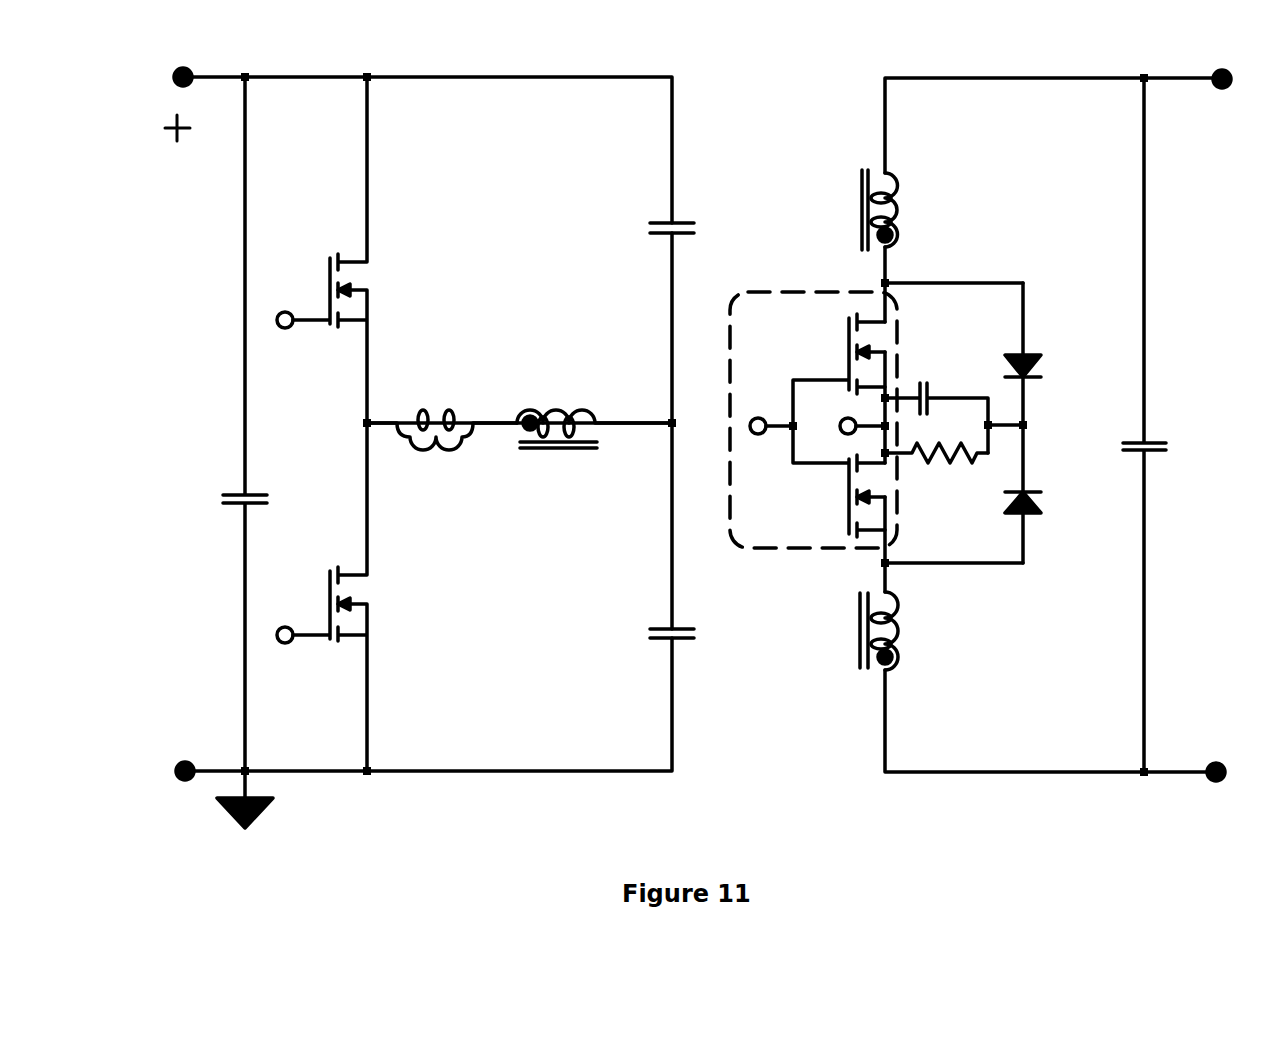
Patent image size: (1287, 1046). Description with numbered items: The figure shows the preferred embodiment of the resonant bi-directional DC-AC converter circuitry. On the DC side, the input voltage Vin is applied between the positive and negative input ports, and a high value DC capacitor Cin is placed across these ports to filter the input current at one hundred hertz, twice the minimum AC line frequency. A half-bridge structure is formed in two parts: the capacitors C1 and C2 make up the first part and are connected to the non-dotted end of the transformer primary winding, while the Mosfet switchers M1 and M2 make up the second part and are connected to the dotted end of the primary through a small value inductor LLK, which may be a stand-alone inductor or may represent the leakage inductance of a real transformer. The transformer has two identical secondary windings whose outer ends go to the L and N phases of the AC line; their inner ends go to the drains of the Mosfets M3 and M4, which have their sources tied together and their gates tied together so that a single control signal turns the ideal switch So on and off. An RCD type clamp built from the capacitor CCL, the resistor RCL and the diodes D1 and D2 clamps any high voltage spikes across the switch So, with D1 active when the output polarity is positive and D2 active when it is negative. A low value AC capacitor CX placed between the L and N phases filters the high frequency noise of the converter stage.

The input voltage Vin is at (189, 154).
The DC capacitor Cin is at (216, 452).
The Mosfet switcher M1 is at (322, 250).
The Mosfet switcher M2 is at (322, 597).
The small value inductor LLK is at (442, 449).
The capacitor C1 is at (625, 233).
The capacitor C2 is at (631, 637).
The ideal switch So is at (813, 449).
The Mosfet M3 is at (817, 374).
The Mosfet M4 is at (822, 477).
The clamp capacitor CCL is at (954, 395).
The clamp resistor RCL is at (936, 477).
The diode D1 is at (1055, 354).
The diode D2 is at (1055, 494).
The AC capacitor CX is at (1170, 425).
The L phase of the AC line L is at (1189, 122).
The N phase of the AC line N is at (1193, 732).